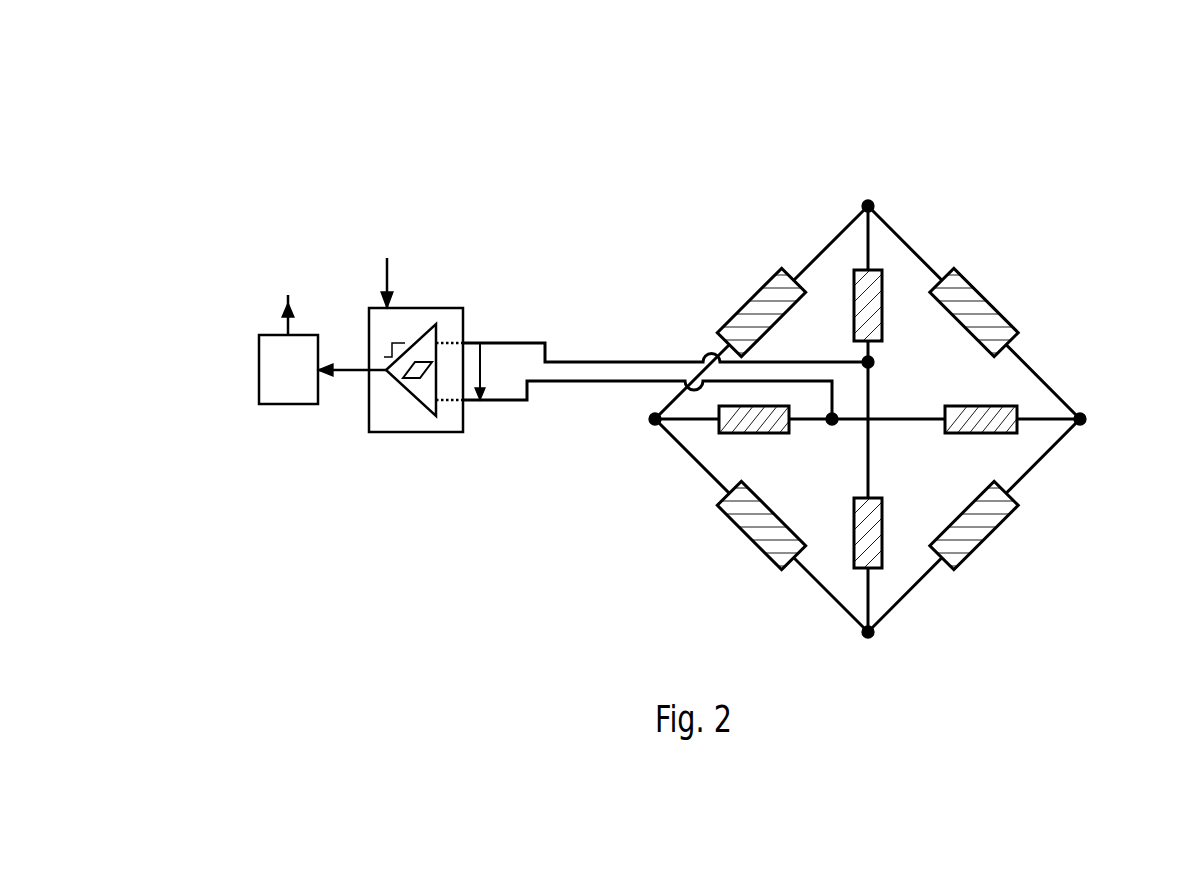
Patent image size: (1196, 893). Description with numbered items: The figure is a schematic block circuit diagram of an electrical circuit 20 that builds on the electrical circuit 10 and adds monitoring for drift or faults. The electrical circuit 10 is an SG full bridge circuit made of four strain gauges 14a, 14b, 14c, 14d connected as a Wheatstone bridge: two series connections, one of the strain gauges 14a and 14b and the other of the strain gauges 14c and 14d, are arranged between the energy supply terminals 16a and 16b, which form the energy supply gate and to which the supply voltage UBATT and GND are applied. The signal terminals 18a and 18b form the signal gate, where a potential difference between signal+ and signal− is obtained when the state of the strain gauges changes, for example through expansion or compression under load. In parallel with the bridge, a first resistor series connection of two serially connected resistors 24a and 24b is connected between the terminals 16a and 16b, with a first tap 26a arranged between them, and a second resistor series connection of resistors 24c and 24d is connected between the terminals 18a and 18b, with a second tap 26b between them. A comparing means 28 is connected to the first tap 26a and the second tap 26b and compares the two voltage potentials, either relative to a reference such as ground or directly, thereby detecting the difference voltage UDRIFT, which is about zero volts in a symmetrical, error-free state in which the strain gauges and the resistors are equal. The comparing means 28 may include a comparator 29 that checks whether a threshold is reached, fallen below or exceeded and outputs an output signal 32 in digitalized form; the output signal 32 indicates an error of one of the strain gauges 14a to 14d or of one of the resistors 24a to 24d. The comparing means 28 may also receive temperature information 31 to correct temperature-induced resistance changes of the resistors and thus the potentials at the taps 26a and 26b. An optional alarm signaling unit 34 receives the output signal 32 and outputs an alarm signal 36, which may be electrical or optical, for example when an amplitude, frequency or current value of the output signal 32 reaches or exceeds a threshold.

The electrical circuit 10 is at (974, 170).
The electrical circuit 20 is at (273, 100).
The strain gauge 14a is at (750, 295).
The strain gauge 14b is at (748, 538).
The strain gauge 14c is at (982, 540).
The strain gauge 14d is at (993, 303).
The energy supply terminal 16a is at (866, 206).
The energy supply terminal 16b is at (874, 632).
The signal terminal 18a is at (653, 425).
The signal terminal 18b is at (1082, 413).
The resistor 24a is at (882, 290).
The resistor 24b is at (882, 548).
The resistor 24c is at (733, 433).
The resistor 24d is at (975, 433).
The first tap 26a is at (874, 362).
The second tap 26b is at (830, 425).
The comparing means 28 is at (416, 364).
The comparator 29 is at (418, 404).
The temperature information 31 is at (387, 268).
The output signal 32 is at (345, 378).
The alarm signaling unit 34 is at (284, 406).
The alarm signal 36 is at (290, 297).